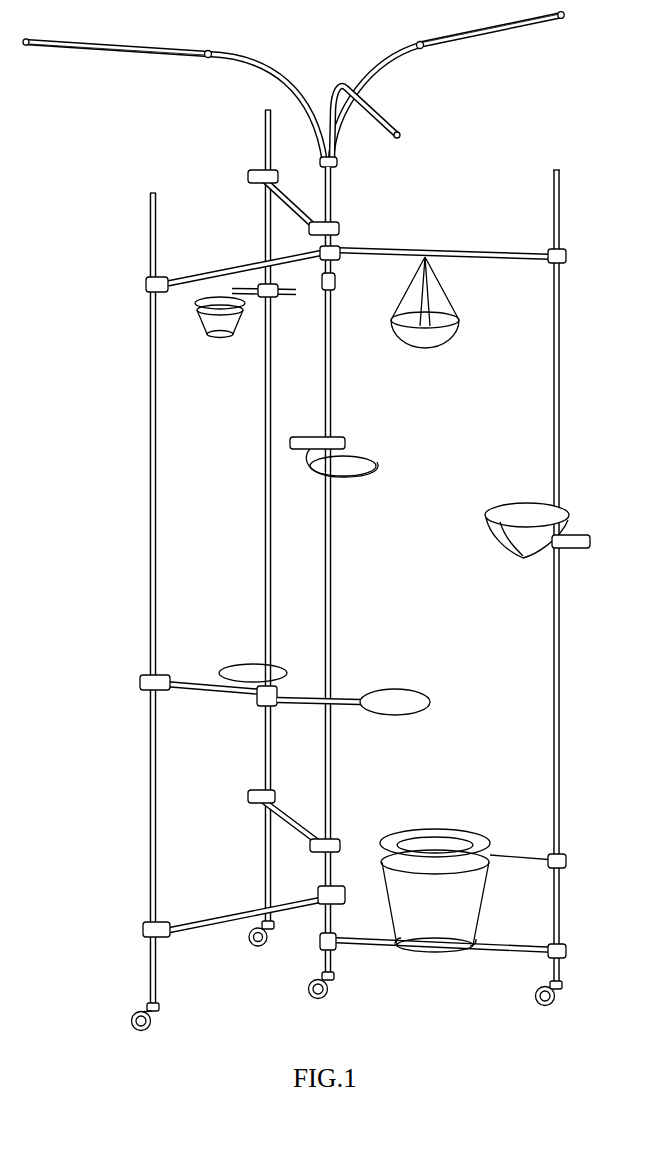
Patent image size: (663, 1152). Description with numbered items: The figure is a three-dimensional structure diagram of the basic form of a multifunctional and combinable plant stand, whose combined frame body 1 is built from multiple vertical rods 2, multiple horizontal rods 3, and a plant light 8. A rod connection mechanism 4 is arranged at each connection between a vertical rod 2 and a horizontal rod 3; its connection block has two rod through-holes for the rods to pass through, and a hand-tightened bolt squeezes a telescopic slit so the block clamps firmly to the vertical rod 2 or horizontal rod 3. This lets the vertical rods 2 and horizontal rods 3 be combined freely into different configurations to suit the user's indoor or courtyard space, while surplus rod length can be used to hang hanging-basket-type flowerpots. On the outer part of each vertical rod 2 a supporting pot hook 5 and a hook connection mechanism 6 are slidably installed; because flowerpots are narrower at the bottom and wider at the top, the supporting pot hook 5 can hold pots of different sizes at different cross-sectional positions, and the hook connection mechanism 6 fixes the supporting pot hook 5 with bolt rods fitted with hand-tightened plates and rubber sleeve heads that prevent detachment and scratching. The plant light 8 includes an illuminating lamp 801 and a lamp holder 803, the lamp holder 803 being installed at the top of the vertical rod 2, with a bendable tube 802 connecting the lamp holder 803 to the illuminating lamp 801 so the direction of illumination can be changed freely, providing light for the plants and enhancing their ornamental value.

The combined frame body 1 is at (185, 920).
The vertical rod 2 is at (147, 284).
The horizontal rod 3 is at (165, 287).
The rod connection mechanism 4 is at (148, 215).
The supporting pot hook 5 is at (178, 690).
The hook connection mechanism 6 is at (148, 680).
The plant light 8 is at (463, 40).
The illuminating lamp 801 is at (568, 22).
The bendable tube 802 is at (363, 83).
The lamp holder 803 is at (340, 163).